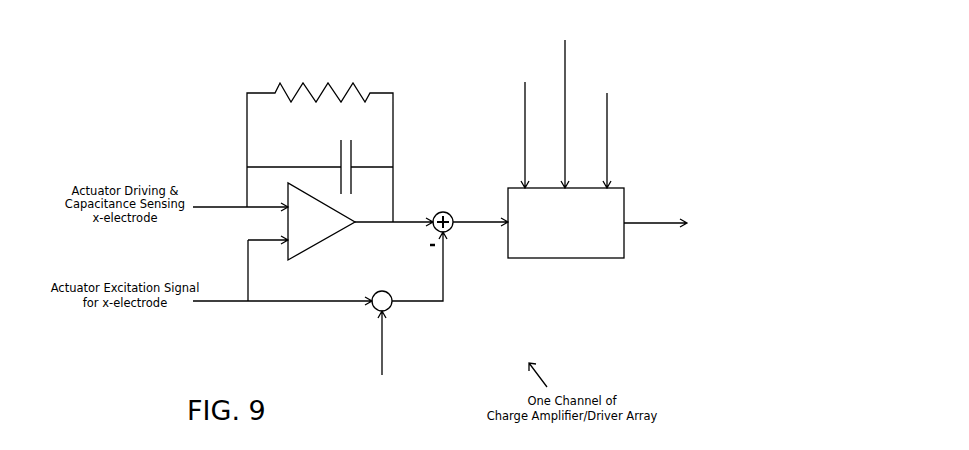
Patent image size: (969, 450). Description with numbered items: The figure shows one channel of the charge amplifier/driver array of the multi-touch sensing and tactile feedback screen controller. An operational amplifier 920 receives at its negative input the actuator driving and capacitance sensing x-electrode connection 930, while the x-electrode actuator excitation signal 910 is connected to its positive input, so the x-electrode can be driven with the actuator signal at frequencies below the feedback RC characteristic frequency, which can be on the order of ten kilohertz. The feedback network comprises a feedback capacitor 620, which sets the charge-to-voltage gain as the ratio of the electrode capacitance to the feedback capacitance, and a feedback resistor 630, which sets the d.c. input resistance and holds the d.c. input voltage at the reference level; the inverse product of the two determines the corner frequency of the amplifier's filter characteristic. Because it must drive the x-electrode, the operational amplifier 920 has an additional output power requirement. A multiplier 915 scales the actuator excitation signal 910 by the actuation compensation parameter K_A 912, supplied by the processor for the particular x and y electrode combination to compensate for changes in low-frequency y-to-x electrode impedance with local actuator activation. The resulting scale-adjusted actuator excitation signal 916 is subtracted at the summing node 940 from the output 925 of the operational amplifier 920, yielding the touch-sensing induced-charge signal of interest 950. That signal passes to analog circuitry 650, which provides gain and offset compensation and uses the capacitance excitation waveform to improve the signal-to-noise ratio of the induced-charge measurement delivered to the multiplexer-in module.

The feedback resistor 630 is at (377, 93).
The feedback capacitor 620 is at (340, 152).
The actuator driving and capacitance sensing x-electrode input 930 is at (222, 207).
The operational amplifier 920 is at (322, 243).
The output of the operational amplifier 925 is at (410, 220).
The subtracting 940 is at (453, 217).
The touch-sensing induced-charge signal of interest 950 is at (462, 227).
The scaled excitation signal 916 is at (445, 287).
The x-electrode actuator excitation signal 910 is at (212, 302).
The multiplier 915 is at (393, 308).
The actuation compensation parameter K_A 912 is at (382, 340).
The analog circuitry 650 is at (572, 259).